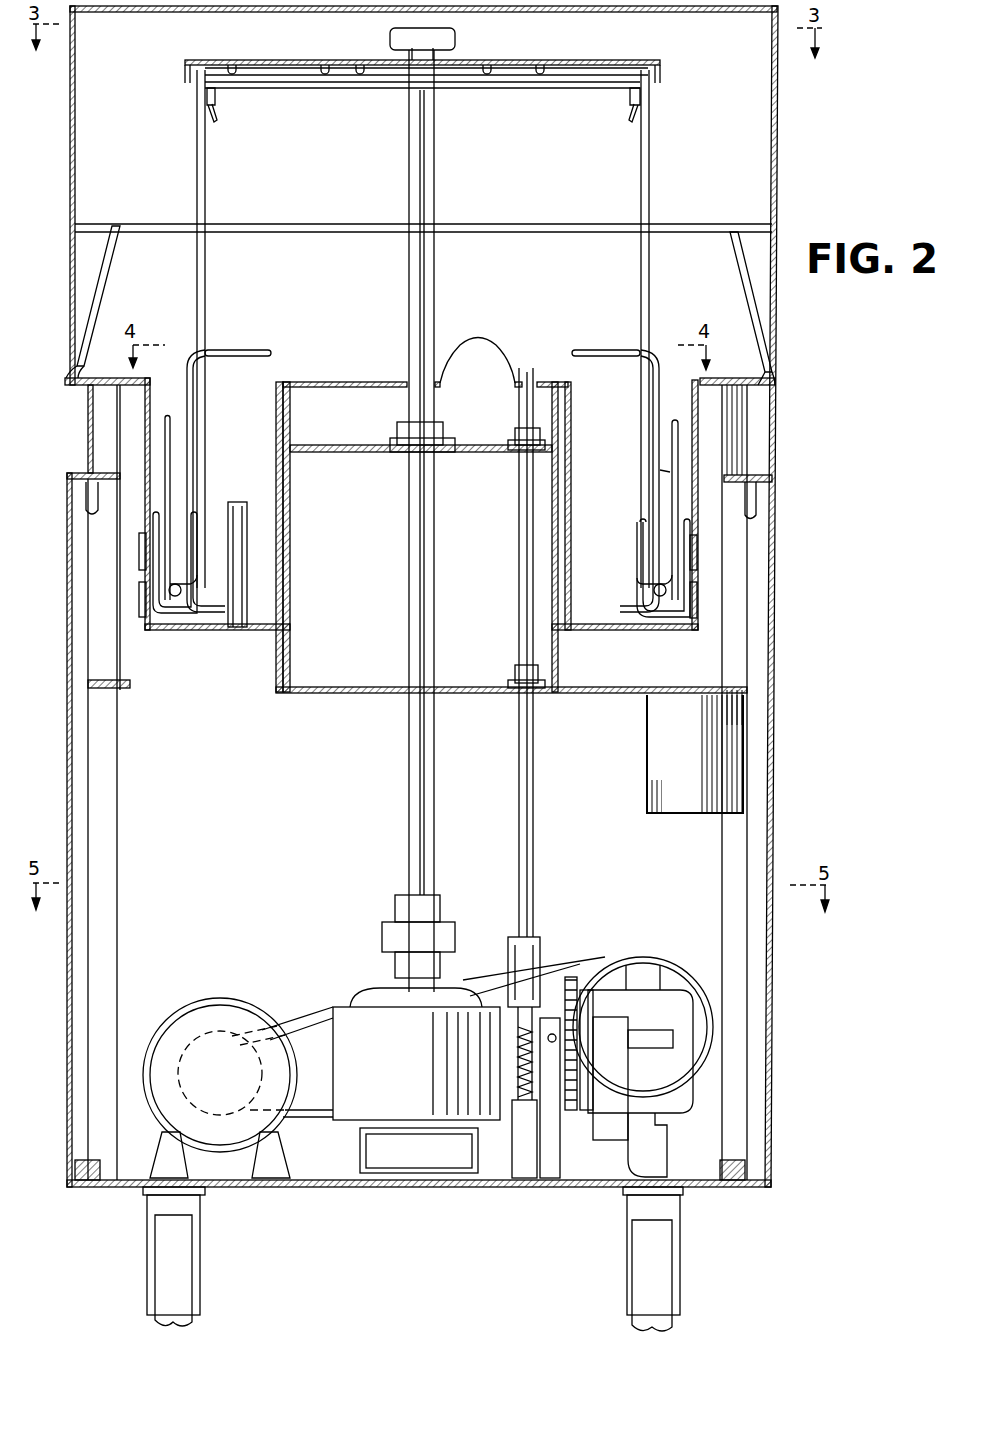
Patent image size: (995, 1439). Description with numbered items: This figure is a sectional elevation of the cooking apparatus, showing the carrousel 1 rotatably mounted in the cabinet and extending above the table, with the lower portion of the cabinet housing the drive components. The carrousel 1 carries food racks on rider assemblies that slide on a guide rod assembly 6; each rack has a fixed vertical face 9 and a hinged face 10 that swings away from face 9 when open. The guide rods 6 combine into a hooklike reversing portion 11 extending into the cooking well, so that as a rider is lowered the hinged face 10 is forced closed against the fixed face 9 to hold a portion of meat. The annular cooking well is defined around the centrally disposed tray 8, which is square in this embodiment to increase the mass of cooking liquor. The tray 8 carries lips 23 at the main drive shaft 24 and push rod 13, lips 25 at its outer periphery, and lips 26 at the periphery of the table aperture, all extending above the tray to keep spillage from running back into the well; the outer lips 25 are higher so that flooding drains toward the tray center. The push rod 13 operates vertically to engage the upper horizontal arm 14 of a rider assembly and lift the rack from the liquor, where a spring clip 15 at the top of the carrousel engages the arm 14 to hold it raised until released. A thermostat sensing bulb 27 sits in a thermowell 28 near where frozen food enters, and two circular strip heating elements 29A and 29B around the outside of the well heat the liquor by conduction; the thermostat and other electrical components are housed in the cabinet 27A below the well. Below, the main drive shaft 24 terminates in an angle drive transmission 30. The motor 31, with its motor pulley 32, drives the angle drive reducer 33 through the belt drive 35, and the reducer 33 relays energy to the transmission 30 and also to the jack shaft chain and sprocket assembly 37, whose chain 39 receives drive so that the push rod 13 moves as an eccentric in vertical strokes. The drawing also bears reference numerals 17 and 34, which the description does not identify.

The carrousel 1 is at (660, 78).
The guide rod assembly 6 is at (650, 194).
The tray 8 is at (365, 447).
The fixed face of food rack 9 is at (670, 472).
The hinged face of food rack 10 is at (679, 446).
The hooklike reversing portion 11 is at (690, 540).
The push rod 13 is at (540, 410).
The upper arm of rider assembly 14 is at (600, 352).
The spring clip 15 is at (636, 127).
The chute 17 is at (740, 264).
The lips at main drive shaft and push rod 23 is at (498, 358).
The main drive shaft 24 is at (436, 186).
The lips at outer periphery of tray 25 is at (280, 382).
The lips at periphery of table aperture 26 is at (140, 378).
The thermostat sensing bulb 27 is at (235, 628).
The cabinet for electrical components 27A is at (737, 772).
The thermowell 28 is at (215, 622).
The circular strip heating element 29A is at (140, 601).
The circular strip heating element 29B is at (140, 556).
The angle drive transmission 30 is at (352, 1120).
The motor 31 is at (160, 1126).
The motor pulley 32 is at (192, 1035).
The angle drive reducer 33 is at (685, 1013).
The pulley 34 is at (656, 945).
The belt drive 35 is at (314, 1008).
The jack shaft chain and sprocket assembly 37 is at (612, 1100).
The chain 39 is at (578, 1064).